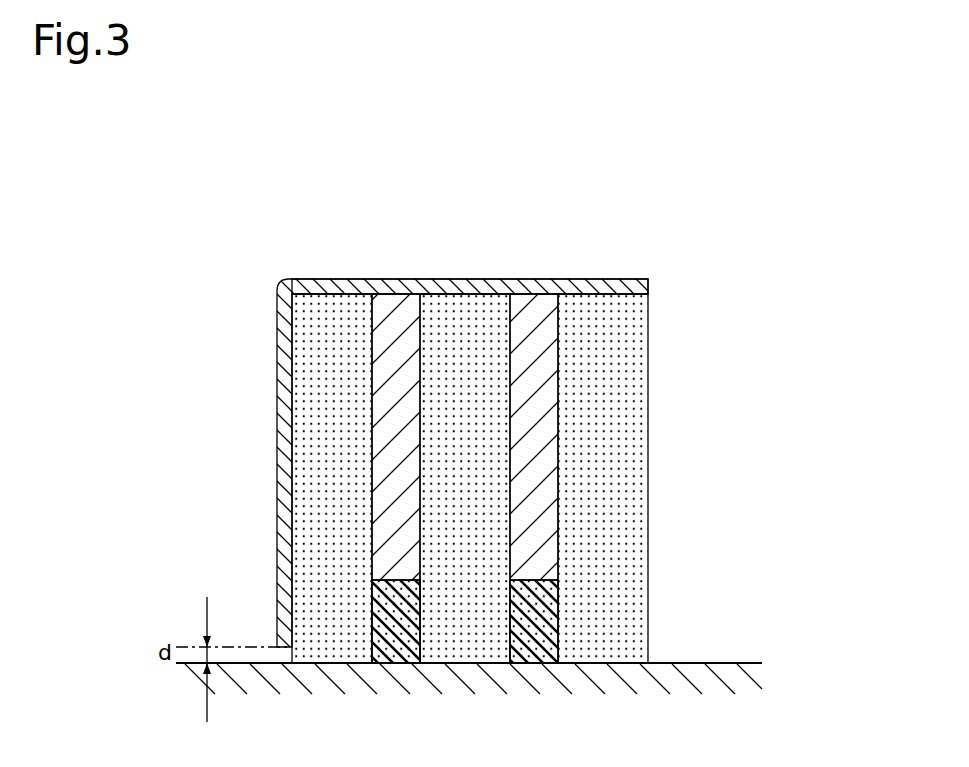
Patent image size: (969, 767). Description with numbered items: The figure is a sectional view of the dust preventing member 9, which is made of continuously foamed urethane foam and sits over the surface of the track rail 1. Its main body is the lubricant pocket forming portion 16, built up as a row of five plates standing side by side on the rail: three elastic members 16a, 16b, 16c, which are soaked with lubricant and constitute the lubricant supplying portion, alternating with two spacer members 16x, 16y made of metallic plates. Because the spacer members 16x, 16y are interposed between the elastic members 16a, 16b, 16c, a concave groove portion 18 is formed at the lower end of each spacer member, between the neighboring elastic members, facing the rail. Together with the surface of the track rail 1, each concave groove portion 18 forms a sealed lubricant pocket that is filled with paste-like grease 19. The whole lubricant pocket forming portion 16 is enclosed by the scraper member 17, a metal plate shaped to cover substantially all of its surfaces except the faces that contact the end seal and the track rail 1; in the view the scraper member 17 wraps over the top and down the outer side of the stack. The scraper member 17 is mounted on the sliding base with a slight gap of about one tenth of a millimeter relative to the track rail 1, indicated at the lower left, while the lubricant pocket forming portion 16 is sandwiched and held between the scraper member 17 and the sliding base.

The track rail 1 is at (736, 660).
The dust preventing member 9 is at (642, 269).
The lubricant pocket forming portion 16 is at (282, 209).
The elastic member 16a is at (320, 305).
The spacer member 16x is at (398, 305).
The elastic member 16b is at (468, 305).
The spacer member 16y is at (533, 305).
The elastic member 16c is at (601, 316).
The scraper member 17 is at (277, 397).
The concave groove portion 18 is at (379, 620).
The grease 19 is at (388, 664).